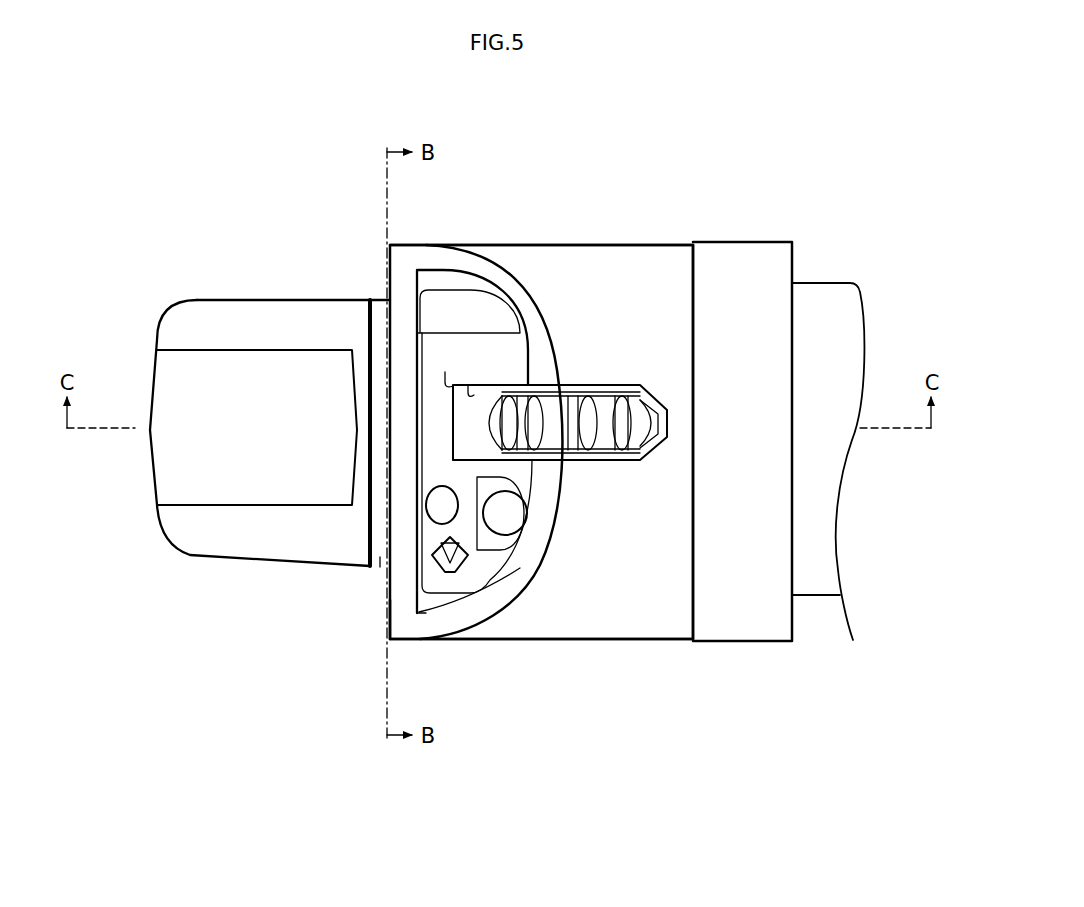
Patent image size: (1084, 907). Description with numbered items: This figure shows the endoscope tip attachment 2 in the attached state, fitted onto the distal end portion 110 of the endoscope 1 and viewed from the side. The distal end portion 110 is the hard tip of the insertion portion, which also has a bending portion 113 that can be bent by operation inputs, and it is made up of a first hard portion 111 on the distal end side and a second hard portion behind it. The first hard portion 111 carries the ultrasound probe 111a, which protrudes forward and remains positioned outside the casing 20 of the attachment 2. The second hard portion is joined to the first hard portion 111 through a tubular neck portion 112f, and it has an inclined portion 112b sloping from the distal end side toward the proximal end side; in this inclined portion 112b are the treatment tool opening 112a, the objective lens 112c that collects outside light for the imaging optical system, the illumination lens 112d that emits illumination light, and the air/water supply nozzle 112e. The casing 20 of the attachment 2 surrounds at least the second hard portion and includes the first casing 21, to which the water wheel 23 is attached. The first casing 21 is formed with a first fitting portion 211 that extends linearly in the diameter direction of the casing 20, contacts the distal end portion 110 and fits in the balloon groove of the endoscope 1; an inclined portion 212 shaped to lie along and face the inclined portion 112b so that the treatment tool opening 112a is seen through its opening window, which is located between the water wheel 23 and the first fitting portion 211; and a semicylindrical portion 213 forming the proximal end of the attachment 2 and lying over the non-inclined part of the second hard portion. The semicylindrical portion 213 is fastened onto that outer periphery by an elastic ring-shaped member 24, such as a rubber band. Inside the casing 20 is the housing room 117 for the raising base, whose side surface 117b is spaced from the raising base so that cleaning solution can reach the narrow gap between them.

The endoscope 1 is at (132, 540).
The endoscope tip attachment 2 is at (625, 157).
The casing 20 is at (658, 668).
The first casing 21 is at (642, 241).
The water wheel 23 is at (598, 410).
The ring-shaped member 24 is at (738, 258).
The distal end portion 110 is at (188, 575).
The first hard portion 111 is at (174, 303).
The ultrasound probe 111a is at (170, 467).
The treatment tool opening 112a is at (450, 403).
The inclined portion 112b is at (440, 312).
The objective lens 112c is at (505, 518).
The illumination lens 112d is at (450, 560).
The air/water supply nozzle 112e is at (424, 508).
The neck portion 112f is at (403, 610).
The bending portion 113 is at (832, 298).
The housing room 117 is at (494, 385).
The side surface of the housing room 117b is at (474, 388).
The first fitting portion 211 is at (432, 595).
The inclined portion 212 is at (543, 517).
The semicylindrical portion 213 is at (666, 268).